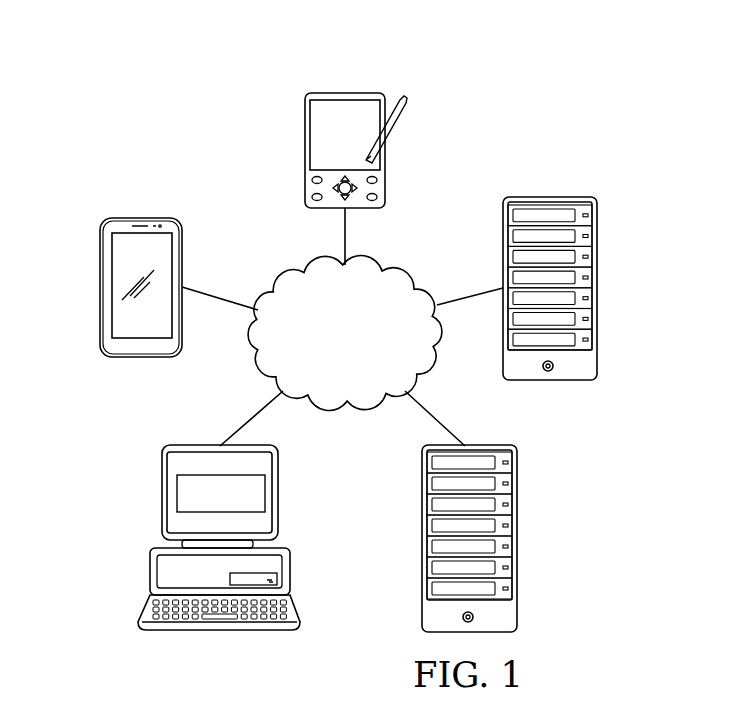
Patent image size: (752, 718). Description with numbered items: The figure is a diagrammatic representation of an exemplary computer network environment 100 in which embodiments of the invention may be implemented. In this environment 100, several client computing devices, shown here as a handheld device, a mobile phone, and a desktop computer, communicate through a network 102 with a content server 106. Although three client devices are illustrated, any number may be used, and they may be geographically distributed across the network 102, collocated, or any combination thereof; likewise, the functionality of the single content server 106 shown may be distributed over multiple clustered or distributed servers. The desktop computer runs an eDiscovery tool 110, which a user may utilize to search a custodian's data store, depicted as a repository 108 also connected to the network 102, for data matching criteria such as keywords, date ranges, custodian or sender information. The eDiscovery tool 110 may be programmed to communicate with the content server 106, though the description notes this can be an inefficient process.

The computer network environment 100 is at (492, 80).
The network 102 is at (300, 278).
The content server 106 is at (598, 260).
The repository 108 is at (520, 540).
The eDiscovery tool 110 is at (177, 490).